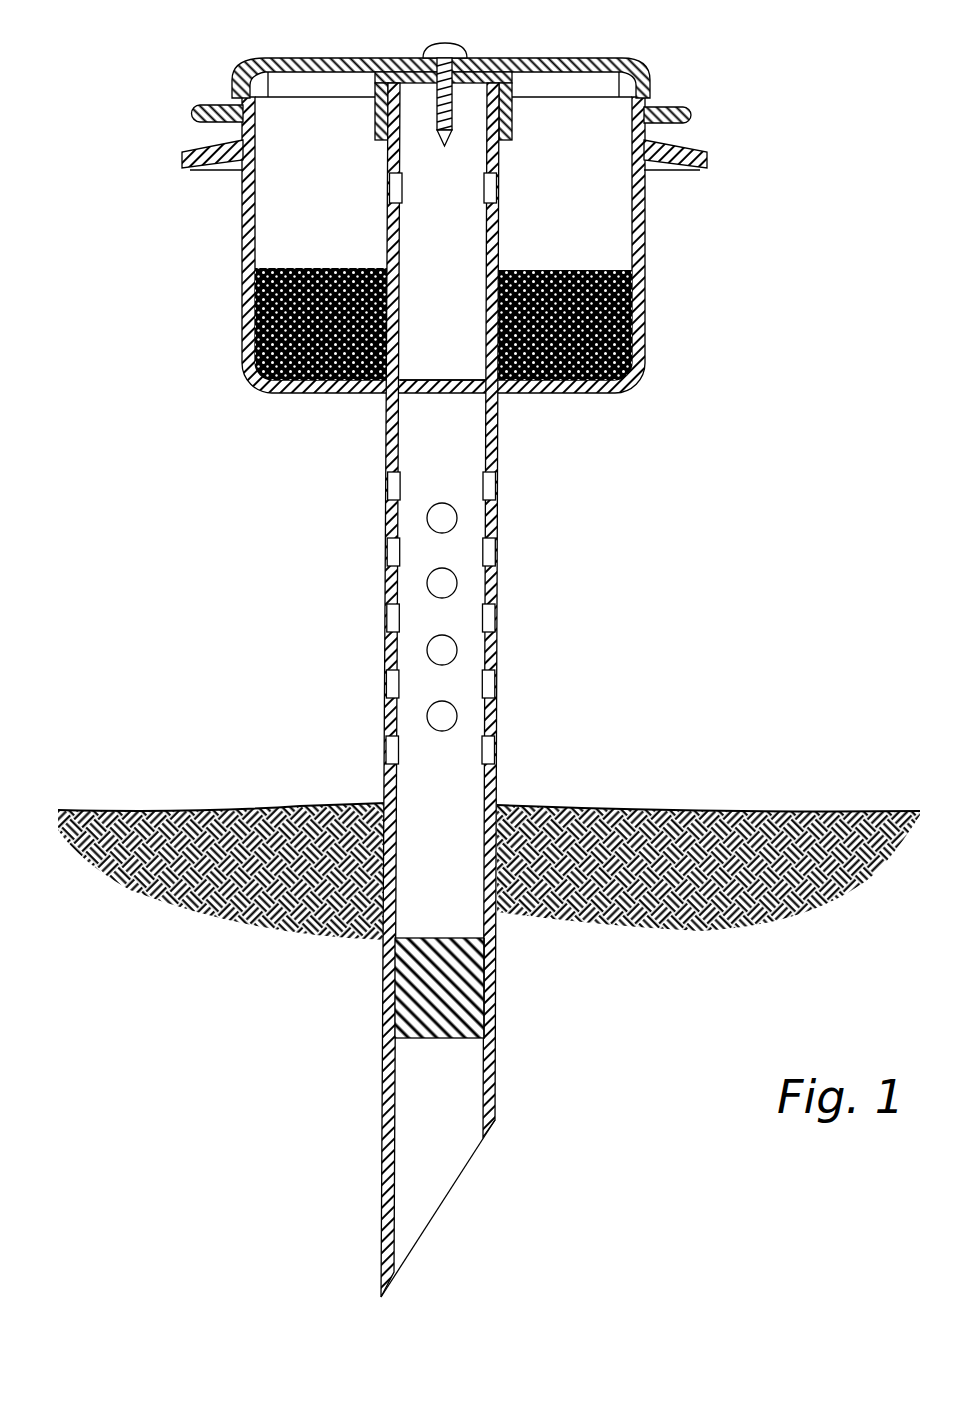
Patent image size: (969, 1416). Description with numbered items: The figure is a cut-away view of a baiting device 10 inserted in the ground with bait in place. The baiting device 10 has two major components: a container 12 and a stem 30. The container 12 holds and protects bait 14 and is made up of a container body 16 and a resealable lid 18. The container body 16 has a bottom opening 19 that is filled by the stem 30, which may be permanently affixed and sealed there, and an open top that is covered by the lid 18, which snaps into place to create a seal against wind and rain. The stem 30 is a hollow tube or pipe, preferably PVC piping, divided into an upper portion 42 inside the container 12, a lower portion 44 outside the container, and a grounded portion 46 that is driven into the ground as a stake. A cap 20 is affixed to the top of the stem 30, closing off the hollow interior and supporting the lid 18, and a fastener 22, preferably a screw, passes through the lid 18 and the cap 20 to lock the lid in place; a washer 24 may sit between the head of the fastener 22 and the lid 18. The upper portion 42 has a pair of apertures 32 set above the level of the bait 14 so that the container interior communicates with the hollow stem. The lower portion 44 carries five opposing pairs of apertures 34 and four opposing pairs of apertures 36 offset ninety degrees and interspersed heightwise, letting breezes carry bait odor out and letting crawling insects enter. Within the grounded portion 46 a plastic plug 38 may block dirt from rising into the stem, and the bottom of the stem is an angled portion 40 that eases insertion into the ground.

The baiting device 10 is at (110, 30).
The container 12 is at (668, 243).
The bait 14 is at (243, 307).
The container body 16 is at (646, 316).
The resealable lid 18 is at (622, 62).
The opening 19 is at (400, 381).
The cap 20 is at (523, 85).
The fastener 22 is at (446, 43).
The washer 24 is at (435, 52).
The stem 30 is at (246, 640).
The apertures 32 is at (498, 186).
The apertures 34 is at (392, 487).
The apertures 36 is at (442, 518).
The plastic plug 38 is at (455, 970).
The angled portion 40 is at (455, 1178).
The upper portion 42 is at (500, 234).
The lower portion 44 is at (499, 433).
The grounded portion 46 is at (497, 941).